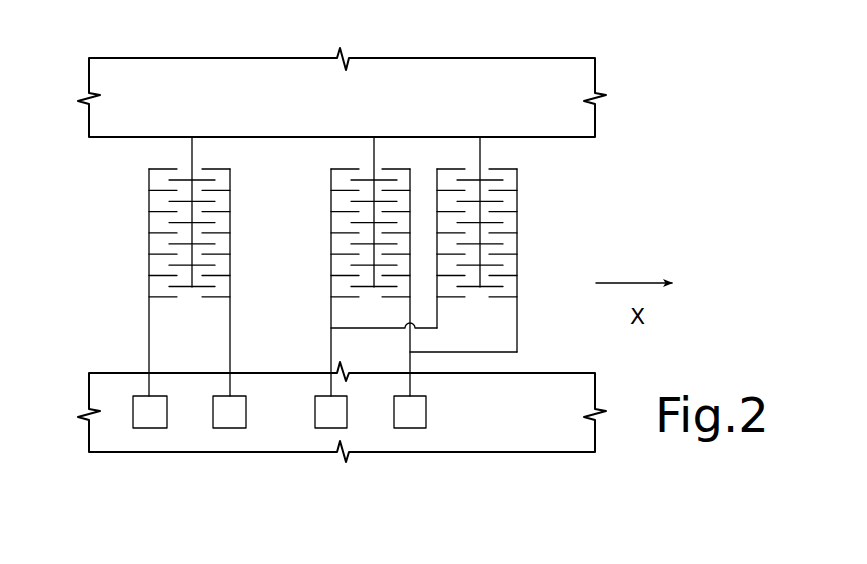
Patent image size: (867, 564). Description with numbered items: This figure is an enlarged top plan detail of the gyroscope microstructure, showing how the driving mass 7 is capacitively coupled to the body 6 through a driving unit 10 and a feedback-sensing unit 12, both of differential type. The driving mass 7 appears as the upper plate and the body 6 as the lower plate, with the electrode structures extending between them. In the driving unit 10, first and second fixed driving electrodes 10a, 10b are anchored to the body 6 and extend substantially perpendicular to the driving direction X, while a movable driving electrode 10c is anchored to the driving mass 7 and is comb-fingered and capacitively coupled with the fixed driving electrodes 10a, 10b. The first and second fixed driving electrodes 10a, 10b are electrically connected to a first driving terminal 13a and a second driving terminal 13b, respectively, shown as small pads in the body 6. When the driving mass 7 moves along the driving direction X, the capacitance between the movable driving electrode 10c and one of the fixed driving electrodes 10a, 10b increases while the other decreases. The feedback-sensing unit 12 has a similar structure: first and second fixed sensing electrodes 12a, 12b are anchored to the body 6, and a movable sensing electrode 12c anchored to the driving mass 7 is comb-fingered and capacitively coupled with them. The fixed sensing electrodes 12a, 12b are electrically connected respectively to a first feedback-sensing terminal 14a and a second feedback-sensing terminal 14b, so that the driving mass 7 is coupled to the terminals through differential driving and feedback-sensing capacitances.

The body 6 is at (530, 450).
The driving mass 7 is at (479, 63).
The driving unit 10 is at (320, 274).
The first fixed driving electrode 10a is at (331, 290).
The second fixed driving electrode 10b is at (410, 312).
The movable driving electrode 10c is at (365, 152).
The feedback-sensing unit 12 is at (125, 251).
The first fixed sensing electrode 12a is at (149, 340).
The second fixed sensing electrode 12b is at (230, 262).
The movable sensing electrode 12c is at (183, 156).
The first driving terminal 13a is at (325, 430).
The second driving terminal 13b is at (410, 430).
The first feedback-sensing terminal 14a is at (143, 430).
The second feedback-sensing terminal 14b is at (228, 430).